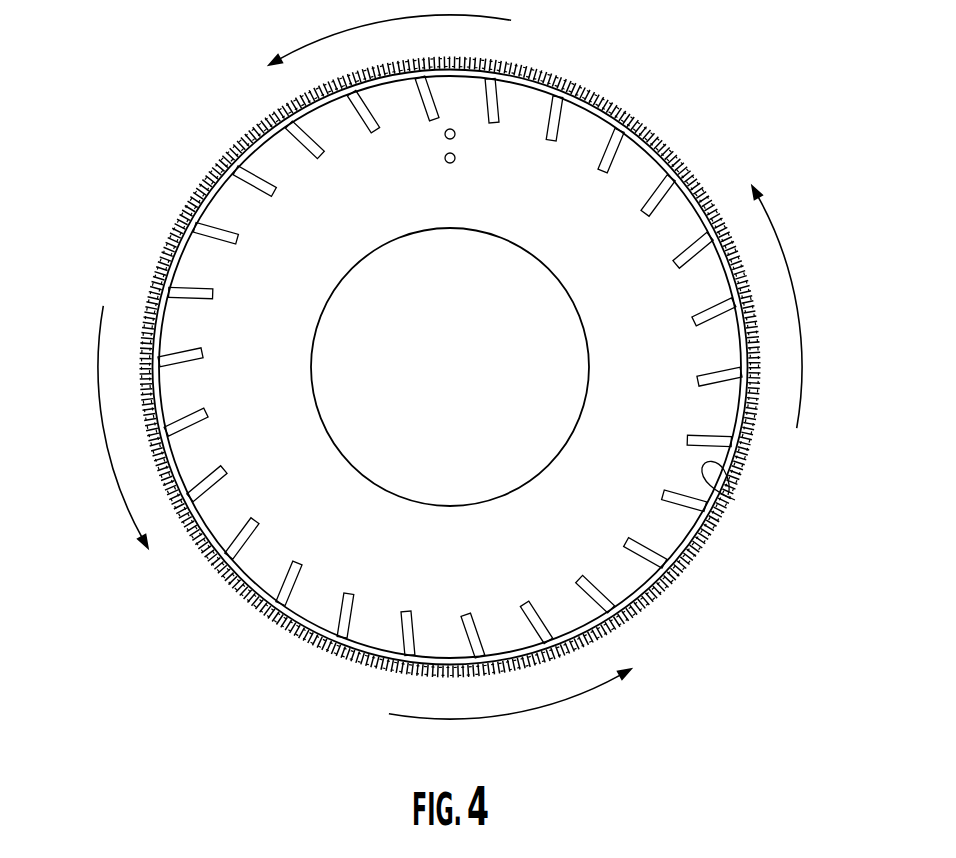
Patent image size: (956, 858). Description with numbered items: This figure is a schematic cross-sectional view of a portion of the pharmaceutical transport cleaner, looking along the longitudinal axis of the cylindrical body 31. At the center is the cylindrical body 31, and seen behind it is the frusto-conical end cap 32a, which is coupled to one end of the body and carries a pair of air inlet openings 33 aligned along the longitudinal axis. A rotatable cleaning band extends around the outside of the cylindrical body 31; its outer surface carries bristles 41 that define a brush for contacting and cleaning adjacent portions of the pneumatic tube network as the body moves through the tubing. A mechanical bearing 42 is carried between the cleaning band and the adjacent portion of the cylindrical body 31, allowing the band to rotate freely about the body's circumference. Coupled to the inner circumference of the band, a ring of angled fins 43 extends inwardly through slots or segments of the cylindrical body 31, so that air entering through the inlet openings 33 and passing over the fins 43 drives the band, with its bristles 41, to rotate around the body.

The cylindrical body 31 is at (735, 500).
The frusto-conical end cap 32a is at (492, 437).
The air inlet openings 33 is at (455, 158).
The bristles 41 is at (234, 146).
The mechanical bearing 42 is at (228, 575).
The fins 43 is at (183, 348).